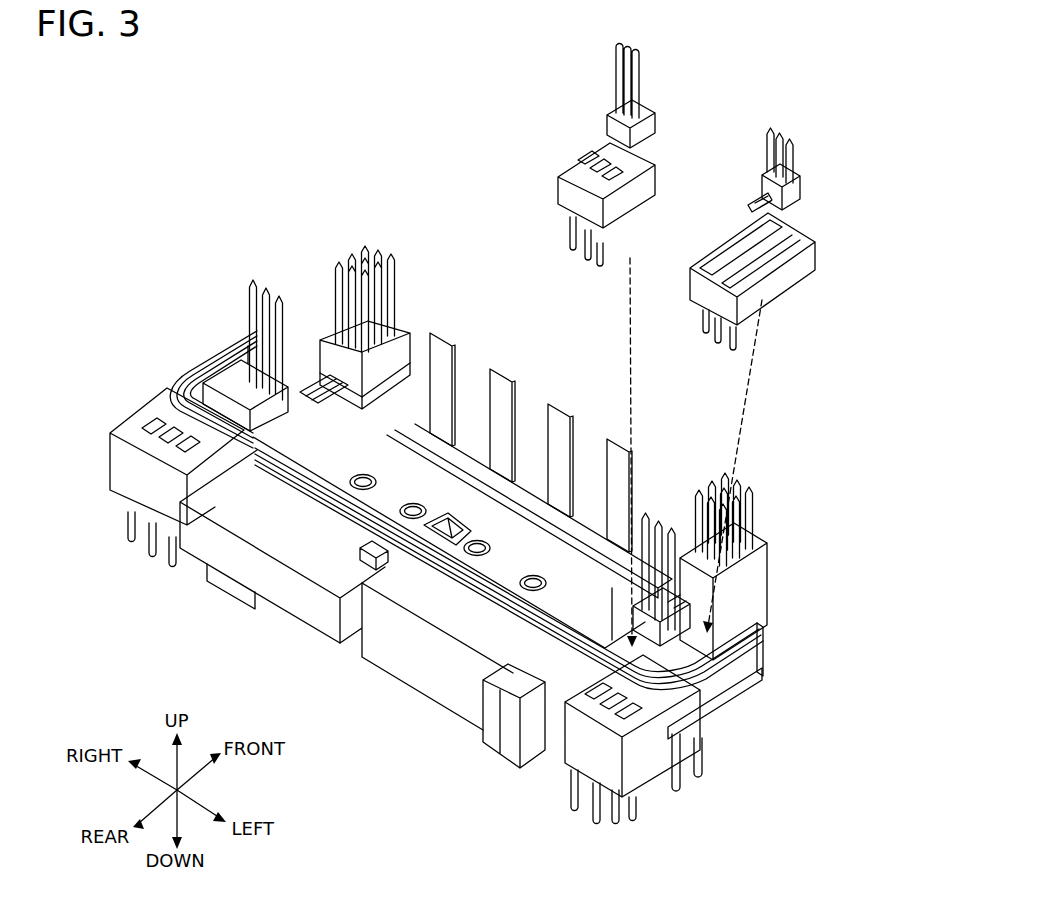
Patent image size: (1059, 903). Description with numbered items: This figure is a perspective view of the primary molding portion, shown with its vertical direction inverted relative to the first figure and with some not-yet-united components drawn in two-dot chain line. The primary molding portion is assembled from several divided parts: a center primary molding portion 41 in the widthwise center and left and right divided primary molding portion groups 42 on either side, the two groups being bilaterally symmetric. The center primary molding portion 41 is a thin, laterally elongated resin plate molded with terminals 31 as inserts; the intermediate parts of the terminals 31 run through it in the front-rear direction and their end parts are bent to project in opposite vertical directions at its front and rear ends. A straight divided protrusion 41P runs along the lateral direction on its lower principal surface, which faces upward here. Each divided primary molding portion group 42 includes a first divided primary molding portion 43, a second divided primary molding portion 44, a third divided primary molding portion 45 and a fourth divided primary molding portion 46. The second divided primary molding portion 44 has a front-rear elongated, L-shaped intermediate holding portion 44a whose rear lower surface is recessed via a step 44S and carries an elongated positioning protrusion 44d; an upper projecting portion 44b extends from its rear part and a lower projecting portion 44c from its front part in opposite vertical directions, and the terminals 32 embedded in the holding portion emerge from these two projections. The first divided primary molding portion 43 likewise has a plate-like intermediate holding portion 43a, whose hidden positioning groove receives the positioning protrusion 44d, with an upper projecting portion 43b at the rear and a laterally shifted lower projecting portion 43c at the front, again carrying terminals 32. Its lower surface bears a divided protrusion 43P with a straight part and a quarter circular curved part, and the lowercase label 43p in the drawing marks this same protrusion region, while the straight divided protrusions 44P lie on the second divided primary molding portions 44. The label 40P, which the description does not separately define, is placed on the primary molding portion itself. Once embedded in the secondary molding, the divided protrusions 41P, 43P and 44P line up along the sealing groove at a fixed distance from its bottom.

The terminals 31 is at (493, 368).
The terminals 32 is at (281, 298).
The lower body portion 40P is at (426, 650).
The center primary molding portion 41 is at (307, 600).
The straight divided protrusion 41P is at (412, 606).
The divided primary molding portion group 42 is at (166, 373).
The first divided primary molding portion 43 is at (449, 458).
The divided protrusion 43P is at (165, 392).
The intermediate holding portion 43a is at (638, 211).
The upper projecting portion 43b is at (604, 812).
The lower projecting portion 43c is at (660, 122).
The bracket 43p is at (510, 748).
The second divided primary molding portion 44 is at (525, 488).
The straight divided protrusion 44P is at (238, 352).
The step 44S is at (750, 198).
The intermediate holding portion 44a is at (718, 723).
The upper projecting portion 44b is at (657, 780).
The lower projecting portion 44c is at (808, 192).
The positioning protrusion 44d is at (714, 250).
The third divided primary molding portion 45 is at (521, 479).
The fourth divided primary molding portion 46 is at (380, 418).